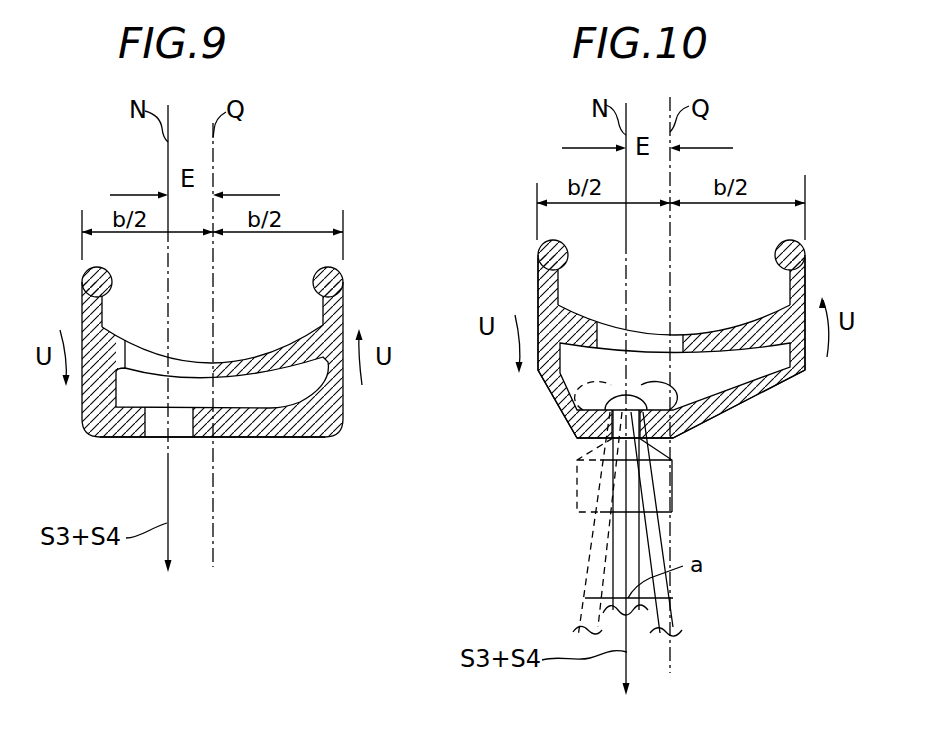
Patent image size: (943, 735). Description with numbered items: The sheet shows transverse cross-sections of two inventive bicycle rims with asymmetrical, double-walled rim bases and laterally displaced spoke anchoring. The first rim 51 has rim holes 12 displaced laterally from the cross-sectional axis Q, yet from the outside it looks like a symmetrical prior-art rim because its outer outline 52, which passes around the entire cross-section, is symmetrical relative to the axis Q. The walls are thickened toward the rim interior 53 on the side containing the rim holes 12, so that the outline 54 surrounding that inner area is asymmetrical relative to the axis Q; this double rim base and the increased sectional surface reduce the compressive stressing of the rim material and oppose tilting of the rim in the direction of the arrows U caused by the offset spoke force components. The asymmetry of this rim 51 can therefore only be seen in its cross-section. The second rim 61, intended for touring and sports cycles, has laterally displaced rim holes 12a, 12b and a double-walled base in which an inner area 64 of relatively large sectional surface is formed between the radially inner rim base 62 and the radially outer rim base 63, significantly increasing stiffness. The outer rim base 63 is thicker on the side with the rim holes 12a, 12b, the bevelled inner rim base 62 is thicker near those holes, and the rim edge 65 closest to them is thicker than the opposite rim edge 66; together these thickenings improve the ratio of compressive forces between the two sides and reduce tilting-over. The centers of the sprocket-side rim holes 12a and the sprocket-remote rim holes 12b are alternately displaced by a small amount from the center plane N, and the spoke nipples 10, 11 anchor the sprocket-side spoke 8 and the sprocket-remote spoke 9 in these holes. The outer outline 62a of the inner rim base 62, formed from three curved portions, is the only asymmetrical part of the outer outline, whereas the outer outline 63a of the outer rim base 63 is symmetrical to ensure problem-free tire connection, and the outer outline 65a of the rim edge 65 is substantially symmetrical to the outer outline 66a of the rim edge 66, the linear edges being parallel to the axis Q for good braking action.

In FIG. 9, the rim 51 is at (100, 186).
In FIG. 9, the outer outline 52 is at (253, 440).
In FIG. 9, the rim interior 53 is at (305, 395).
In FIG. 9, the outline of inner area 54 is at (248, 374).
In FIG. 9, the rim holes 12 is at (160, 428).
In FIG. 10, the rim 61 is at (527, 171).
In FIG. 10, the radially inner rim base 62 is at (742, 397).
In FIG. 10, the outer outline of radially inner rim base 62a is at (713, 427).
In FIG. 10, the radially outer rim base 63 is at (735, 333).
In FIG. 10, the outer outline of radially outer rim base 63a is at (705, 328).
In FIG. 10, the inner area 64 is at (740, 362).
In FIG. 10, the rim edge 65 is at (553, 330).
In FIG. 10, the outer outline of rim edge 65a is at (537, 345).
In FIG. 10, the rim edge 66 is at (805, 320).
In FIG. 10, the outer outline of rim edge 66a is at (807, 333).
In FIG. 10, the sprocket-side rim holes 12a is at (663, 450).
In FIG. 10, the sprocket-remote rim holes 12b is at (590, 425).
In FIG. 10, the spoke nipple 10 is at (660, 490).
In FIG. 10, the spoke nipple 11 is at (592, 492).
In FIG. 10, the sprocket-remote spoke 9 is at (587, 607).
In FIG. 10, the sprocket-side spoke 8 is at (672, 607).